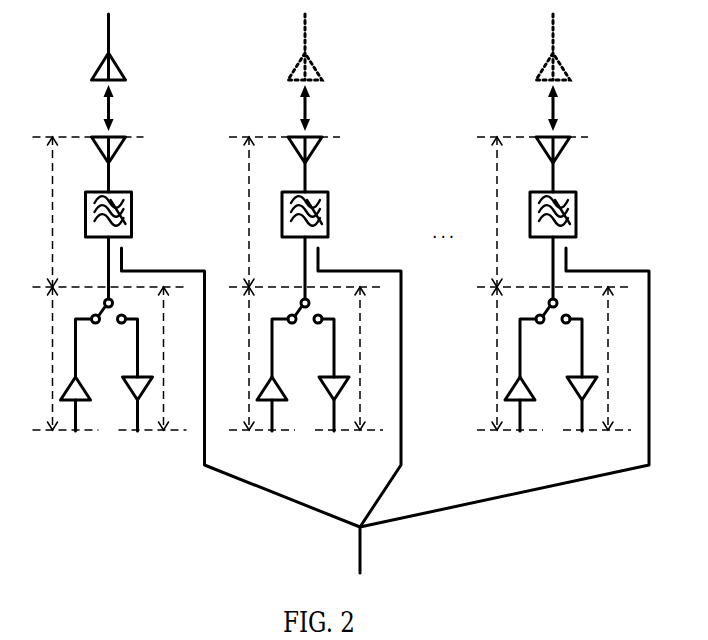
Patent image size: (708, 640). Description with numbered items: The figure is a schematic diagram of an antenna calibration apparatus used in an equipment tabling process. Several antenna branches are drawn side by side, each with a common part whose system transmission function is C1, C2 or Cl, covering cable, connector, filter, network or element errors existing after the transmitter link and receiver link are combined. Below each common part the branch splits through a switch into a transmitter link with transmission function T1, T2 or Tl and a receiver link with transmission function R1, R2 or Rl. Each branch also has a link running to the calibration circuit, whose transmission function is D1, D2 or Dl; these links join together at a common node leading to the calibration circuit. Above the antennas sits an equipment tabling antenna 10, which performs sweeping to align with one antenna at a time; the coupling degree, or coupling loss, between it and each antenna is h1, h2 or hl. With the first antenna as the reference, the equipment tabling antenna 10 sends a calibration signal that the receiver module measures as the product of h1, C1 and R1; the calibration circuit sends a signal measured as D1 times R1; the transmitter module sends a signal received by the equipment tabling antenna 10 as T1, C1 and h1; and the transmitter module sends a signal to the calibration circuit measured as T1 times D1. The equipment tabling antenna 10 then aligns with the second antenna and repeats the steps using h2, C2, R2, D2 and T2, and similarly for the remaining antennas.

The equipment tabling antenna 10 is at (117, 70).
The coupling degree of the first antenna h1 is at (88, 108).
The coupling degree of the second antenna h2 is at (284, 108).
The coupling degree of the l-th antenna hl is at (533, 108).
The system transmission function of the common part of the first antenna C1 is at (81, 212).
The system transmission function of the common part of the second antenna C2 is at (277, 212).
The system transmission function of the common part of the l-th antenna Cl is at (527, 212).
The transmission function of the transmitter link of the first antenna T1 is at (103, 359).
The transmission function of the transmitter link of the second antenna T2 is at (300, 359).
The transmission function of the transmitter link of the l-th antenna Tl is at (548, 359).
The transmission function of the receiver link of the first antenna R1 is at (155, 359).
The transmission function of the receiver link of the second antenna R2 is at (352, 359).
The transmission function of the receiver link of the l-th antenna Rl is at (598, 359).
The transmission function of the link between the first antenna and the calibration D1 is at (241, 387).
The transmission function of the link between the second antenna and the calibration D2 is at (359, 387).
The transmission function of the link between the l-th antenna and the calibration c Dl is at (504, 388).